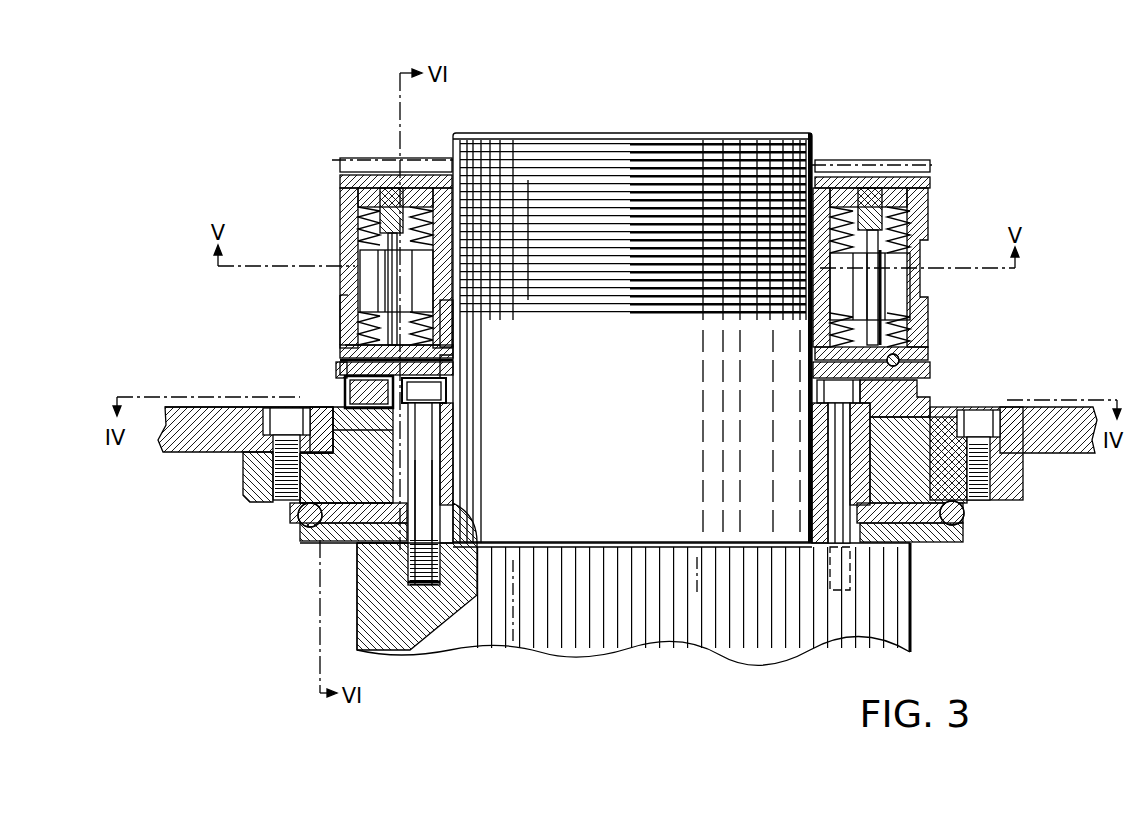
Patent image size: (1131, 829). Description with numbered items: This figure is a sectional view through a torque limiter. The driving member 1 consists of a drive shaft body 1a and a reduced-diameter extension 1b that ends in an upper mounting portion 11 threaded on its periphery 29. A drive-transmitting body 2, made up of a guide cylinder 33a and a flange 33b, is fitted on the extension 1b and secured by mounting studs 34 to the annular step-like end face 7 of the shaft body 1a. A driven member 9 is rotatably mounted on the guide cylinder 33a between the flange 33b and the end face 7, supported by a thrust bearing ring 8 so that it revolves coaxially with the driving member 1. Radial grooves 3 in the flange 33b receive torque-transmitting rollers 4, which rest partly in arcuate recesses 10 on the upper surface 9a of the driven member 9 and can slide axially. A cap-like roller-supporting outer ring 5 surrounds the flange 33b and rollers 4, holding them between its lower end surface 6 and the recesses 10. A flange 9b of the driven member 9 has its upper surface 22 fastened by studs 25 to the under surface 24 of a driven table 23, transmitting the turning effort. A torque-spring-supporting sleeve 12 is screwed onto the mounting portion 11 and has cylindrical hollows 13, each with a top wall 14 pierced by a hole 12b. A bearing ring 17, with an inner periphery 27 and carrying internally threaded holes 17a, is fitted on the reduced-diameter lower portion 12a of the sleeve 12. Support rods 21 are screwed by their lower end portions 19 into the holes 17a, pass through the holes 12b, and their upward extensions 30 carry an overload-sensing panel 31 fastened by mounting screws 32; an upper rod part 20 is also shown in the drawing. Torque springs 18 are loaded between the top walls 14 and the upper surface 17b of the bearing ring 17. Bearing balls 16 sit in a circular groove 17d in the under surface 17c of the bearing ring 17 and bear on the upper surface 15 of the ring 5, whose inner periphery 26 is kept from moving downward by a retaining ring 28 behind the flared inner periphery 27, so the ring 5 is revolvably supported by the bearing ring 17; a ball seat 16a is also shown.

The driving member 1 is at (573, 610).
The drive shaft body 1a is at (643, 605).
The reduced-diameter extension 1b is at (663, 500).
The drive-transmitting body 2 is at (453, 437).
The radial grooves 3 is at (352, 425).
The torque-transmitting rollers 4 is at (332, 467).
The roller-supporting outer ring 5 is at (345, 395).
The lower end surface 6 is at (342, 377).
The annular steplike end face 7 is at (392, 541).
The thrust bearing ring 8 is at (313, 538).
The driven member 9 is at (297, 502).
The upper surface 9a is at (372, 462).
The flange 9b is at (243, 492).
The arcuate recesses 10 is at (382, 422).
The upper mounting portion 11 is at (619, 133).
The torque-spring-supporting sleeve 12 is at (358, 190).
The reduced-diameter lower portion 12a is at (350, 250).
The hole 12b is at (362, 192).
The cylindrical hollows 13 is at (345, 222).
The top wall 14 is at (350, 205).
The upper surface 15 is at (335, 368).
The bearing balls 16 is at (423, 460).
The bolt seat 16a is at (369, 392).
The bearing ring 17 is at (452, 345).
The internally threaded holes 17a is at (431, 276).
The upper surface 17b is at (350, 338).
The under surface 17c is at (345, 360).
The circular groove 17d is at (350, 356).
The torque springs 18 is at (365, 340).
The lower end portions 19 is at (395, 343).
The screw head 20 is at (387, 180).
The support rods 21 is at (390, 268).
The upper surface 22 is at (247, 442).
The driven table 23 is at (185, 410).
The under surface 24 is at (260, 457).
The studs 25 is at (275, 410).
The inner periphery 26 is at (424, 390).
The inner periphery 27 is at (455, 355).
The retaining ring 28 is at (455, 375).
The threaded periphery 29 is at (442, 186).
The upward extensions 30 is at (402, 190).
The overload-sensing panel 31 is at (367, 177).
The mounting screws 32 is at (395, 187).
The guide cylinder 33a is at (450, 495).
The flange 33b is at (922, 378).
The mounting studs 34 is at (425, 466).